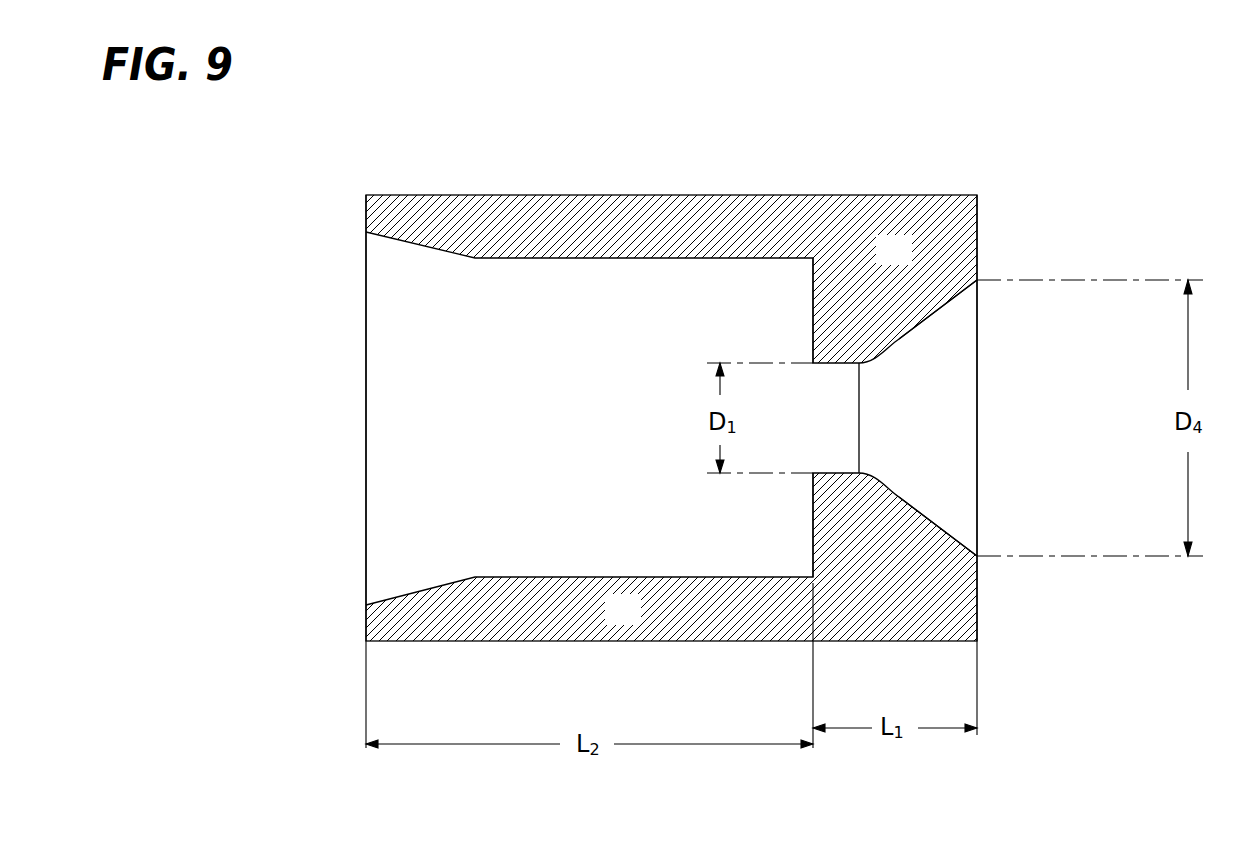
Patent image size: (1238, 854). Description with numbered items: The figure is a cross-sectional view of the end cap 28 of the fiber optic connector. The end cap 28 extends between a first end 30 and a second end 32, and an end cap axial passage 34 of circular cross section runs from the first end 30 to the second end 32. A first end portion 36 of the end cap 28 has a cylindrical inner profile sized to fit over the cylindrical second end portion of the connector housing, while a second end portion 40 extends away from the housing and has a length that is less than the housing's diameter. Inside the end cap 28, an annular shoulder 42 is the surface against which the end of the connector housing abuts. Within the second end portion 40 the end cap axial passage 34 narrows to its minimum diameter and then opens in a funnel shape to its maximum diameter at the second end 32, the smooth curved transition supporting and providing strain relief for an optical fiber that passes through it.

The end cap 28 is at (986, 138).
The first end 30 is at (366, 212).
The second end 32 is at (963, 222).
The end cap axial passage 34 is at (966, 430).
The first end portion 36 is at (639, 622).
The second end portion 40 is at (910, 261).
The annular shoulder 42 is at (813, 284).